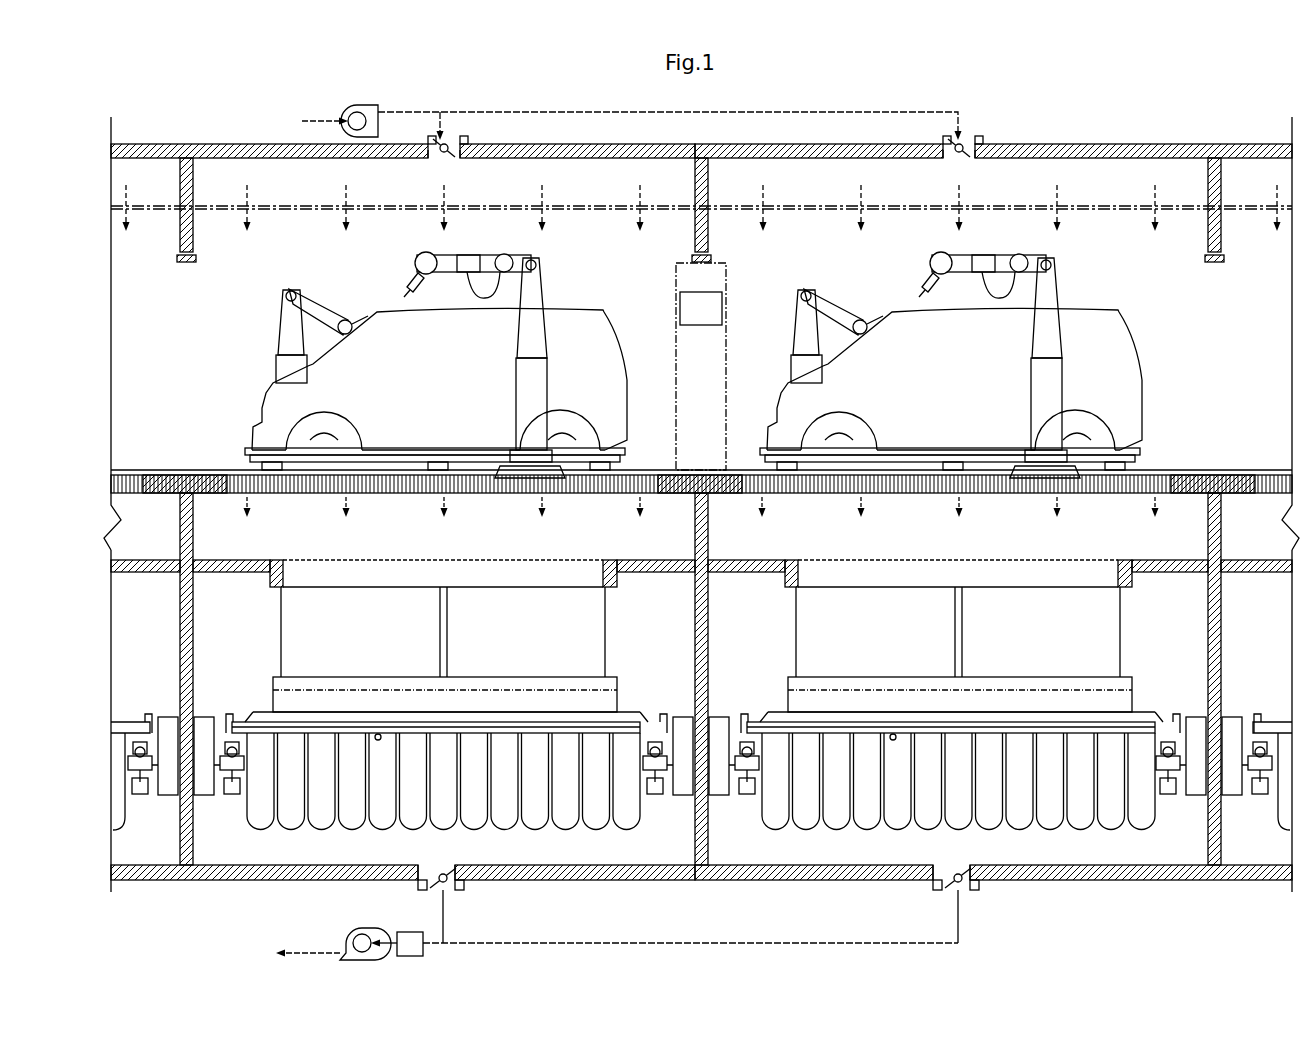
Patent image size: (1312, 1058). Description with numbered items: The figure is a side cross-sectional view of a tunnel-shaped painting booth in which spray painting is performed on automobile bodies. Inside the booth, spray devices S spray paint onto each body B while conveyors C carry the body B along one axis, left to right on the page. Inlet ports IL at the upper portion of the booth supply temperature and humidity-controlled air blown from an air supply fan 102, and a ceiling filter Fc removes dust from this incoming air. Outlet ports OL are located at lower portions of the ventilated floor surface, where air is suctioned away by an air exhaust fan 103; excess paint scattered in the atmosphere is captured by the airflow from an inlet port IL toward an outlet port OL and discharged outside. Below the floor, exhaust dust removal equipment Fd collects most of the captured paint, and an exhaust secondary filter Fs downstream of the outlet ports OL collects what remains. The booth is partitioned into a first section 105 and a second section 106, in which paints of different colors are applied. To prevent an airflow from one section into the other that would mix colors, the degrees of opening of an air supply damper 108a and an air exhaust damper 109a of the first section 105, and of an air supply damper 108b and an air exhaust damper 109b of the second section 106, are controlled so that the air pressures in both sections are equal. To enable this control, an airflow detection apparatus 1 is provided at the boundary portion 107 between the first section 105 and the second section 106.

The airflow detection apparatus 1 is at (686, 288).
The air supply fan 102 is at (350, 107).
The air exhaust fan 103 is at (352, 933).
The first section 105 is at (262, 141).
The second section 106 is at (1145, 140).
The boundary portion 107 is at (728, 268).
The air supply damper 108a is at (438, 145).
The air supply damper 108b is at (962, 145).
The air exhaust damper 109a is at (447, 888).
The air exhaust damper 109b is at (962, 888).
The inlet port IL is at (456, 154).
The outlet port OL is at (440, 872).
The ceiling filter Fc is at (214, 212).
The exhaust dust removal equipment Fd is at (262, 808).
The exhaust secondary filter Fs is at (408, 929).
The spray device S is at (412, 278).
The body B is at (581, 330).
The conveyor C is at (268, 448).